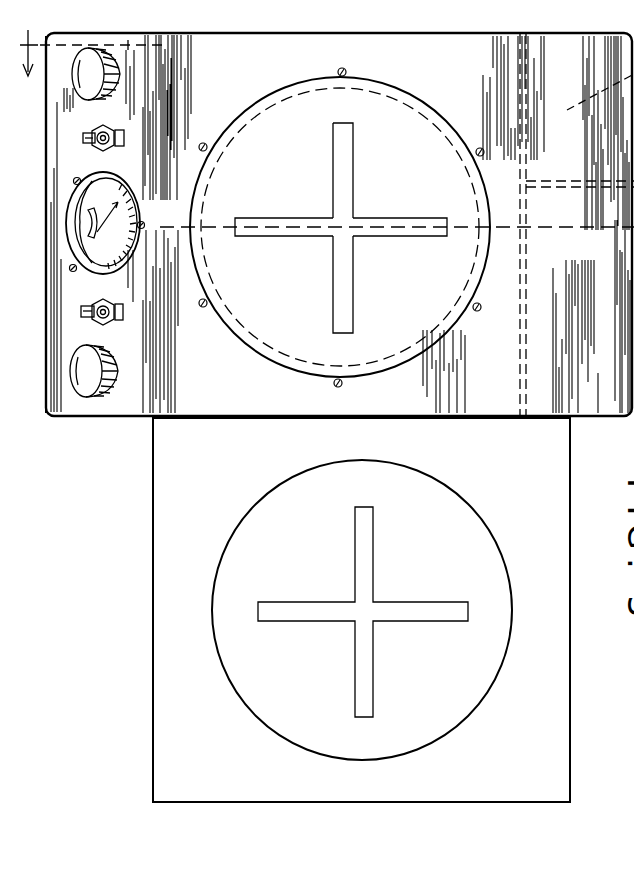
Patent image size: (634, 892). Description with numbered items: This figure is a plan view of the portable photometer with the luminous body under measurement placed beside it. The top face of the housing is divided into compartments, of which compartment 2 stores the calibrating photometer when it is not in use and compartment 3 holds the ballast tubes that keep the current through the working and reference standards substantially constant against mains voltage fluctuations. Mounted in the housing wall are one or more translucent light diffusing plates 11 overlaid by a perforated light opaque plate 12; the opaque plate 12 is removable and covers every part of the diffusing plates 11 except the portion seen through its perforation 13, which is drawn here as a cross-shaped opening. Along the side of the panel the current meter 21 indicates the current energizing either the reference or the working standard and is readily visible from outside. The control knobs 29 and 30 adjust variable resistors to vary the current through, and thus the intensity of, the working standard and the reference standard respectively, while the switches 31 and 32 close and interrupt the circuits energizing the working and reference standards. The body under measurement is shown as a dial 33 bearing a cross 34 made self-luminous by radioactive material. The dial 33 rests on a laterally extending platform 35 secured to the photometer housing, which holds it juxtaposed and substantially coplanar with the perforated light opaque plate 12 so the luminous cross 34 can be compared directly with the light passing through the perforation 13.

The compartment 2 is at (85, 53).
The compartment 3 is at (545, 375).
The translucent light diffusing plate 11 is at (342, 142).
The perforated light opaque plate 12 is at (282, 337).
The perforation 13 is at (350, 273).
The current meter 21 is at (78, 226).
The control knob 29 is at (90, 380).
The control knob 30 is at (82, 62).
The switch 31 is at (81, 308).
The switch 32 is at (83, 137).
The dial 33 is at (470, 688).
The cross 34 is at (310, 612).
The platform 35 is at (162, 558).